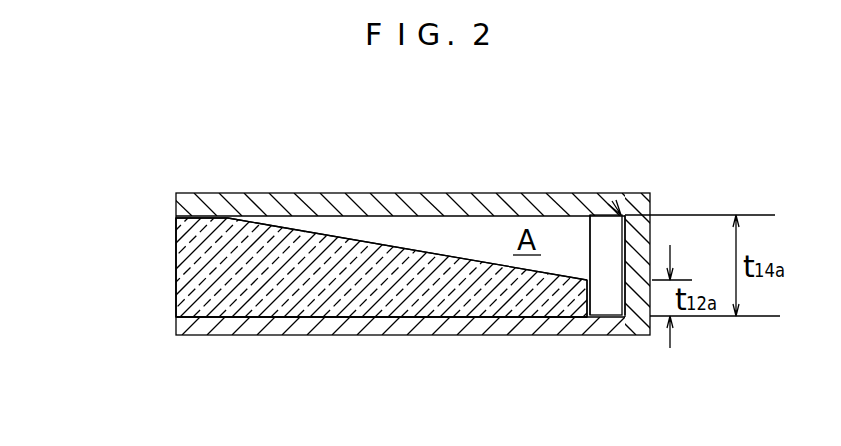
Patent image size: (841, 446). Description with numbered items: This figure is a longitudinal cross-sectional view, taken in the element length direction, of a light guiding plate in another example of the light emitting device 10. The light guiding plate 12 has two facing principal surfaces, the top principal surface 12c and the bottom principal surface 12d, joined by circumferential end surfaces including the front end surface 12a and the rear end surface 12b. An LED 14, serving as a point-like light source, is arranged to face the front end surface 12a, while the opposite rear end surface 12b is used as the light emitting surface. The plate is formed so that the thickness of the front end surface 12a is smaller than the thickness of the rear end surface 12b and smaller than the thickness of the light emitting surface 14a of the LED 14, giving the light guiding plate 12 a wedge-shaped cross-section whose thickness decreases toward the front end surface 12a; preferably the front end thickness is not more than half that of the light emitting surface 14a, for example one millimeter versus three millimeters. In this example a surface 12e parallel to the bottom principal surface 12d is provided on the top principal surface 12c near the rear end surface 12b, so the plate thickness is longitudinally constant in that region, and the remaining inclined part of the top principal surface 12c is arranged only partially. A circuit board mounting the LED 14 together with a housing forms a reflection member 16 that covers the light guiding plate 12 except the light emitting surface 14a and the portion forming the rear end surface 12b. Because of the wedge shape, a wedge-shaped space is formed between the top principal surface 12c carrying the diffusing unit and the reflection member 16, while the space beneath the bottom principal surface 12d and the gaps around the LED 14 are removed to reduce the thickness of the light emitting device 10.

The light emitting device 10 is at (138, 173).
The light guiding plate 12 is at (380, 229).
The front end surface 12a is at (600, 298).
The rear end surface 12b is at (176, 274).
The top principal surface 12c is at (455, 256).
The bottom principal surface 12d is at (340, 317).
The surface parallel to the bottom principal surface 12e is at (206, 216).
The LED 14 is at (621, 215).
The light emitting surface of the LED 14a is at (590, 265).
The reflection member 16 is at (613, 200).